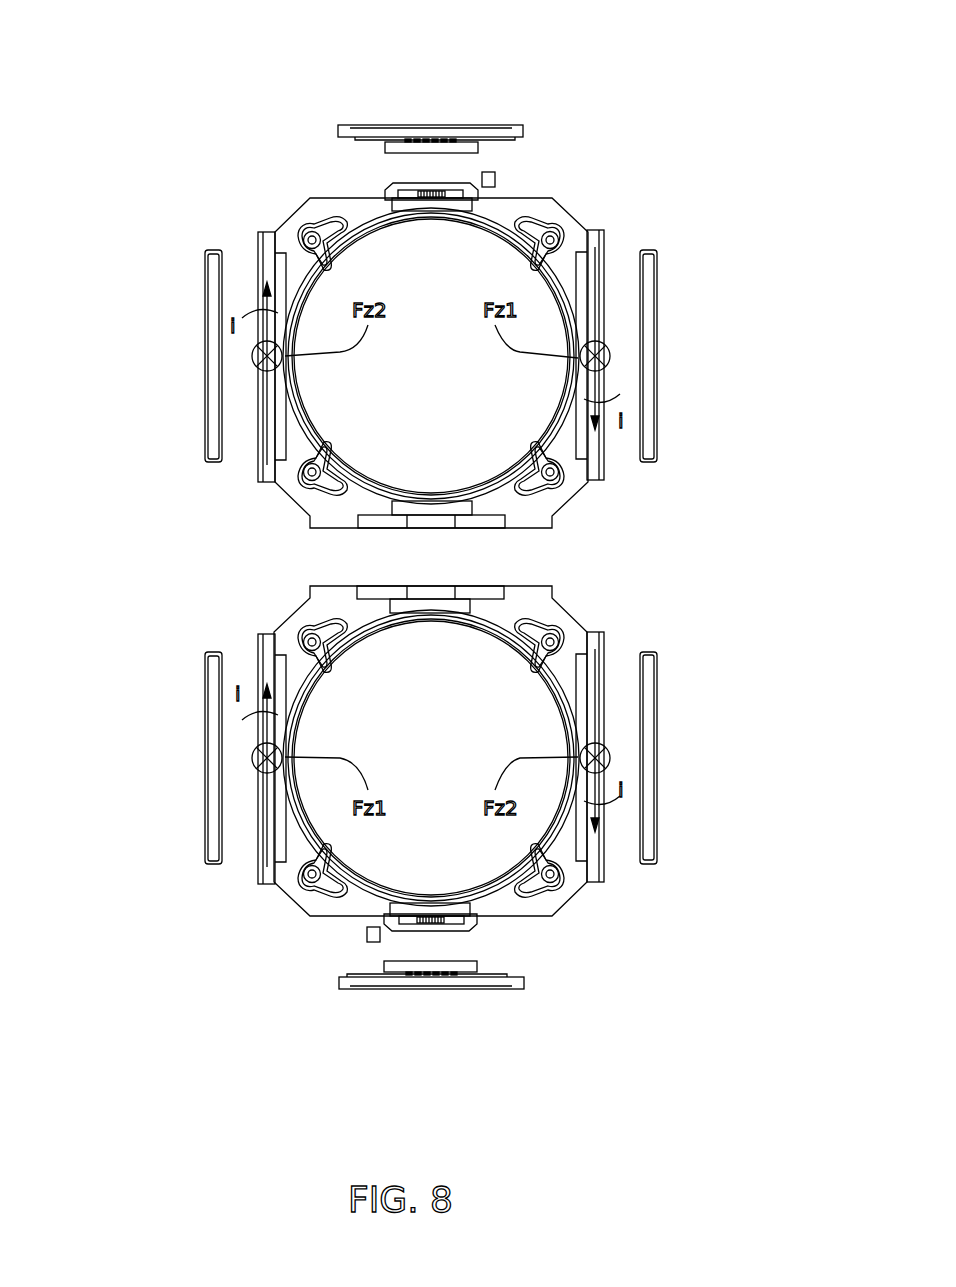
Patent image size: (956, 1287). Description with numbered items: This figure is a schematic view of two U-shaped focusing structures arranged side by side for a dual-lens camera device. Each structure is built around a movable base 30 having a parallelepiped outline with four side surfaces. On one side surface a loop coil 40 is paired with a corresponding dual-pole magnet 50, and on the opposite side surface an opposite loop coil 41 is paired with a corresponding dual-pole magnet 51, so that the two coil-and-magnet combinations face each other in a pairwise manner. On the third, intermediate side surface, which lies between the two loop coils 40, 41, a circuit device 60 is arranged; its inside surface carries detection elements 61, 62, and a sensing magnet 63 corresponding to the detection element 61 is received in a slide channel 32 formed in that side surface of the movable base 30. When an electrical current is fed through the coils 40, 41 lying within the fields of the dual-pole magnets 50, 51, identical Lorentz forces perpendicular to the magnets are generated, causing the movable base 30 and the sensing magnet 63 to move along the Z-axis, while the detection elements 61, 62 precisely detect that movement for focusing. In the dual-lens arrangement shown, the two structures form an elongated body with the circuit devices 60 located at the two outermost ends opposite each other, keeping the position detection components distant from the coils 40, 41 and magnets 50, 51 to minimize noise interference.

The movable base 30 is at (308, 610).
The slide channel 32 is at (405, 198).
The loop coil 40 is at (267, 232).
The loop coil 41 is at (596, 232).
The dual-pole magnet 50 is at (205, 354).
The dual-pole magnet 51 is at (660, 352).
The circuit device 60 is at (497, 125).
The detection element 61 is at (478, 148).
The detection element 62 is at (495, 178).
The sensing magnet 63 is at (436, 198).